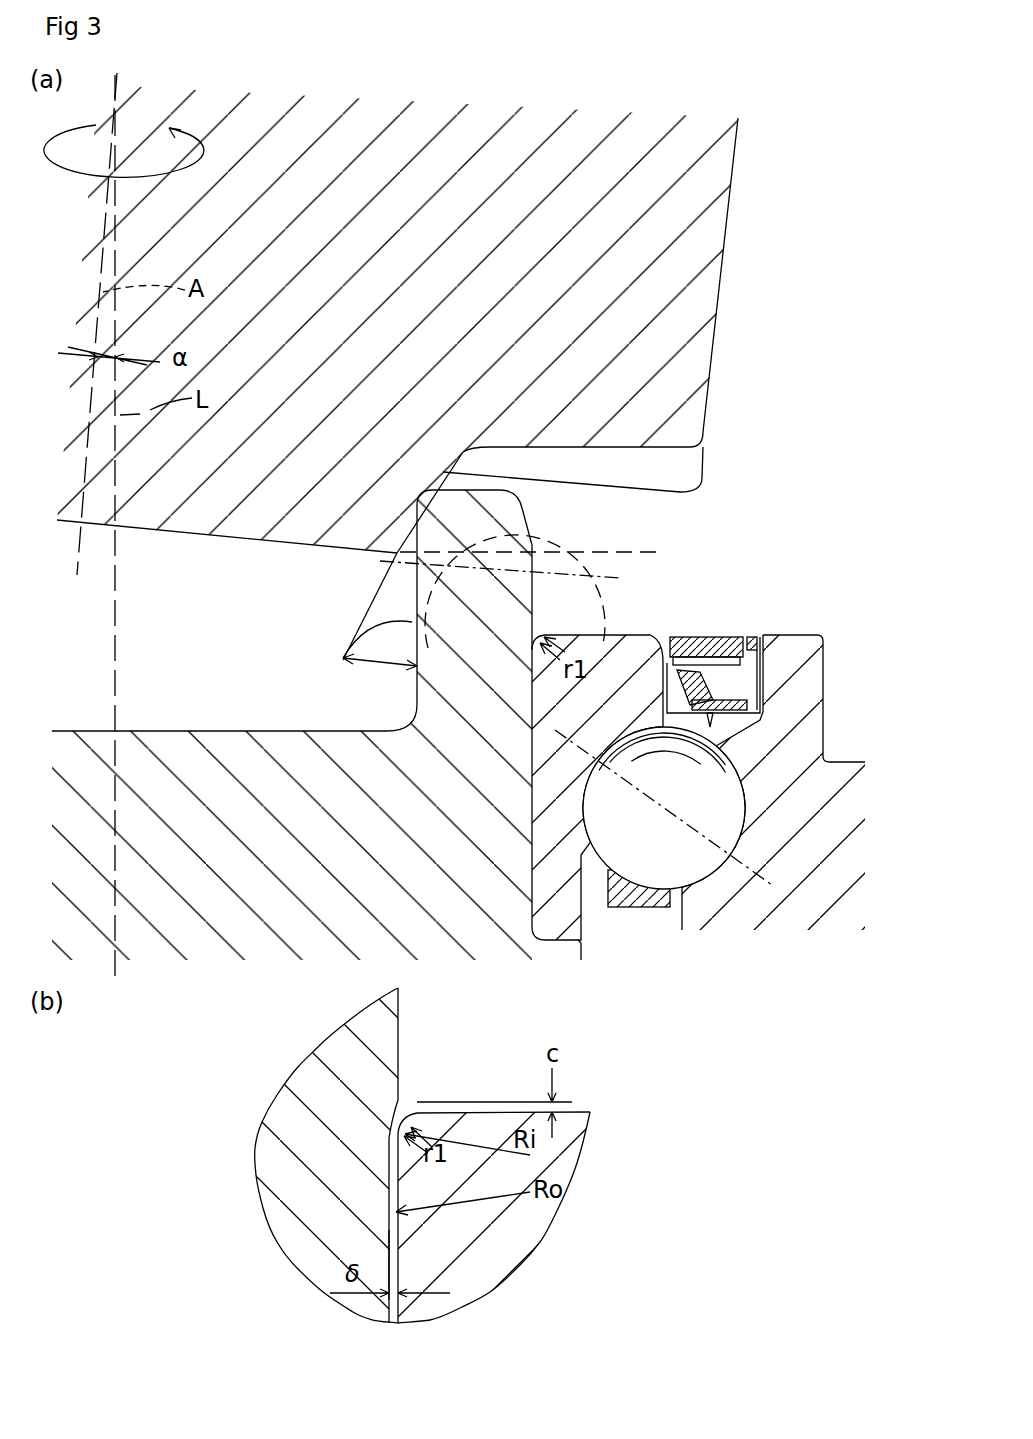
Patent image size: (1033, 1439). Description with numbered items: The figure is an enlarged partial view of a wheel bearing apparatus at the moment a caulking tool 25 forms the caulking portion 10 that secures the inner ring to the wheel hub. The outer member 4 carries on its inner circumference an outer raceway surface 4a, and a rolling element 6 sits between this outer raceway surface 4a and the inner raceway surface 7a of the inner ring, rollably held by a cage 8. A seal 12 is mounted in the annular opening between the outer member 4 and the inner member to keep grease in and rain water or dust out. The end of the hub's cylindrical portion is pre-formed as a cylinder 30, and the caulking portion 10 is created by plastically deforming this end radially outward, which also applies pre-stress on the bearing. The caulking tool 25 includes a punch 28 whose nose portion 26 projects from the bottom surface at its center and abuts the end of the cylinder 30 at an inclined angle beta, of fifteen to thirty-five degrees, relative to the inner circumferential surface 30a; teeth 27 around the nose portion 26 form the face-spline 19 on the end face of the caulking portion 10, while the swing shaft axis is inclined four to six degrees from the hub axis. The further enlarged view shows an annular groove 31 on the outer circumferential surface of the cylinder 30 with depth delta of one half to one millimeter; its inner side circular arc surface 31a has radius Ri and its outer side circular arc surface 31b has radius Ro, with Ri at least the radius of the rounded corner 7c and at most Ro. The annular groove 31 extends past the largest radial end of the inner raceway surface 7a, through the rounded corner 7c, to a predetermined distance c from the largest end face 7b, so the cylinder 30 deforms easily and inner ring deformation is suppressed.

The outer member 4 is at (773, 842).
The outer raceway surface 4a is at (720, 800).
The rolling element 6 is at (677, 862).
The inner raceway surface 7a is at (617, 810).
The largest end face 7b is at (578, 1110).
The rounded corner 7c is at (405, 1108).
The cage 8 is at (637, 908).
The caulking portion 10 is at (612, 596).
The seal 12 is at (725, 640).
The face-spline 19 is at (620, 537).
The caulking tool 25 is at (764, 387).
The nose portion 26 is at (180, 517).
The teeth 27 is at (658, 477).
The punch 28 is at (673, 228).
The cylinder 30 is at (397, 553).
The inner circumferential surface 30a is at (340, 647).
The annular groove 31 is at (389, 1162).
The inner side circular arc surface 31a is at (415, 1104).
The outer side circular arc surface 31b is at (389, 1213).